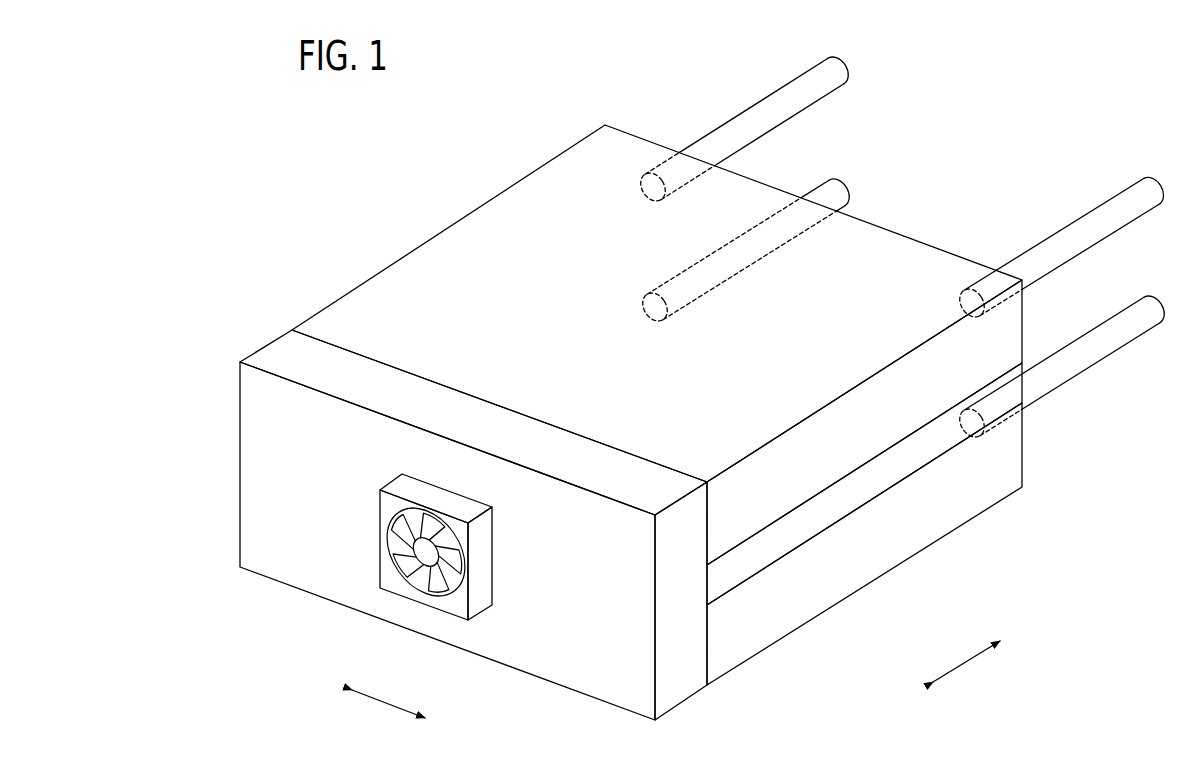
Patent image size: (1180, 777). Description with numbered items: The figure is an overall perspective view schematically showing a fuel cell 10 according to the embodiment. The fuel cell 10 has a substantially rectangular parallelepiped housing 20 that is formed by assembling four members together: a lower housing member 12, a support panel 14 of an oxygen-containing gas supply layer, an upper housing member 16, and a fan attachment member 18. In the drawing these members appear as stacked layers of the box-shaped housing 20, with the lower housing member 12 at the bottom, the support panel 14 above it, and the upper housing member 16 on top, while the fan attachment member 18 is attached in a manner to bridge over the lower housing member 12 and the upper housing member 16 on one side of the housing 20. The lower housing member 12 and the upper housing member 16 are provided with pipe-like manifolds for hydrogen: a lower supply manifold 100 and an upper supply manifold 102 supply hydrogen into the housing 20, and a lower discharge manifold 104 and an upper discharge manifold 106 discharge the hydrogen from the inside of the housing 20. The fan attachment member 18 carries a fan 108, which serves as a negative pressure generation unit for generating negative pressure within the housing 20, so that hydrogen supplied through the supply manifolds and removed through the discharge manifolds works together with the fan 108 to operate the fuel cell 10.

The fuel cell 10 is at (1046, 76).
The lower housing member 12 is at (837, 588).
The support panel 14 is at (892, 473).
The upper housing member 16 is at (913, 408).
The fan attachment member 18 is at (578, 678).
The housing 20 is at (567, 149).
The lower supply manifold 100 is at (1135, 313).
The upper supply manifold 102 is at (1123, 193).
The lower discharge manifold 104 is at (838, 192).
The upper discharge manifold 106 is at (821, 73).
The fan 108 is at (400, 570).